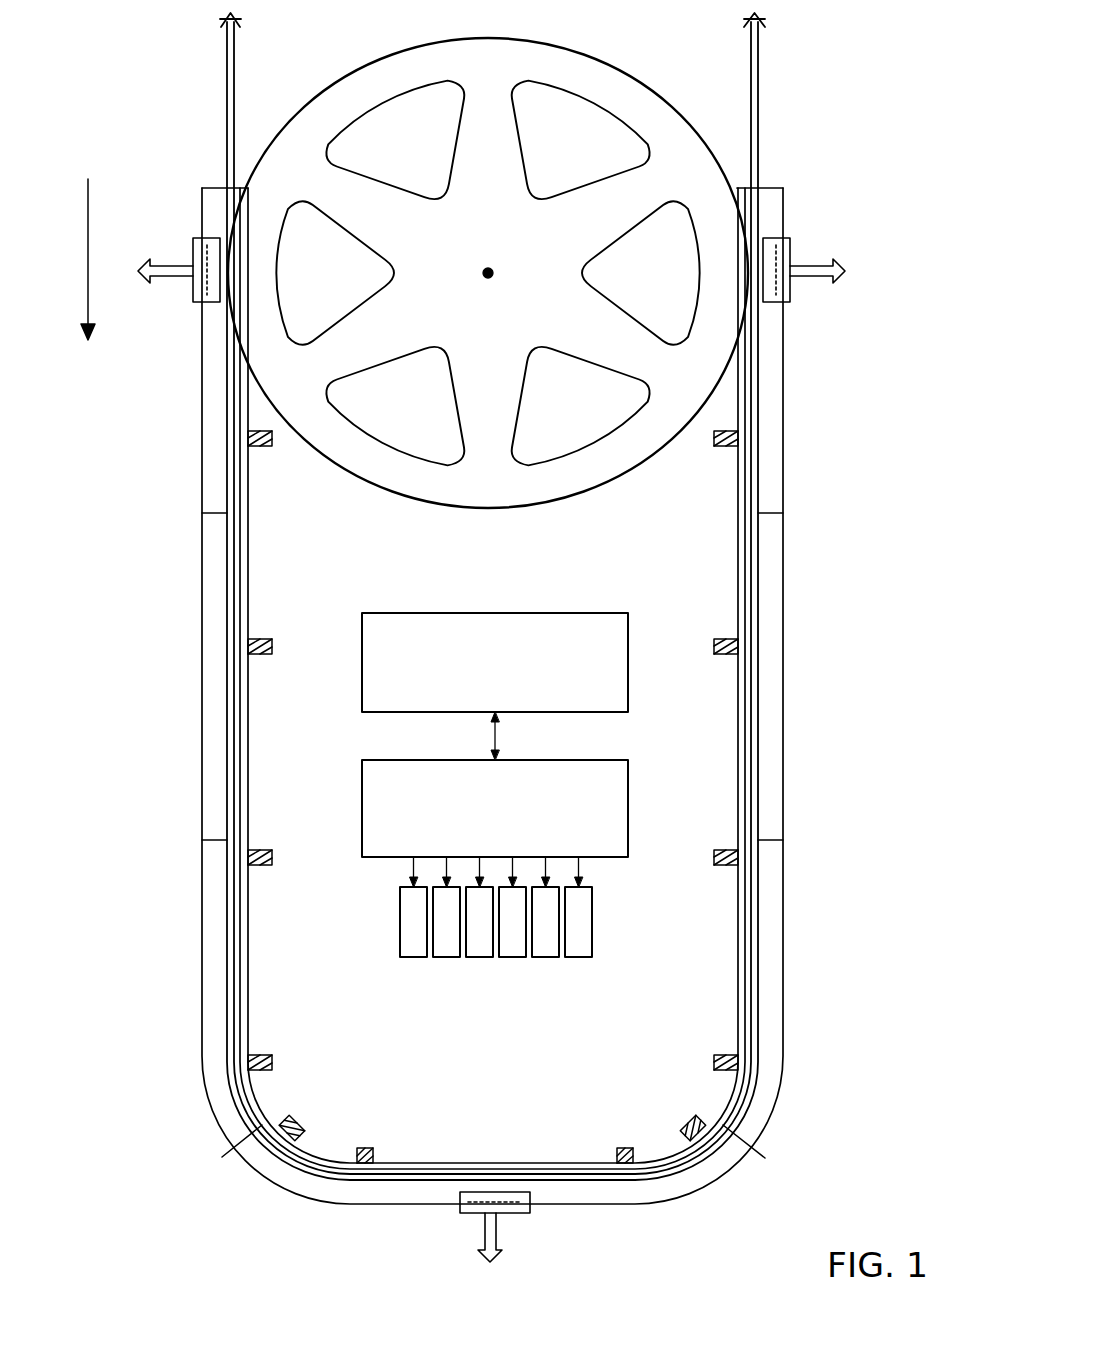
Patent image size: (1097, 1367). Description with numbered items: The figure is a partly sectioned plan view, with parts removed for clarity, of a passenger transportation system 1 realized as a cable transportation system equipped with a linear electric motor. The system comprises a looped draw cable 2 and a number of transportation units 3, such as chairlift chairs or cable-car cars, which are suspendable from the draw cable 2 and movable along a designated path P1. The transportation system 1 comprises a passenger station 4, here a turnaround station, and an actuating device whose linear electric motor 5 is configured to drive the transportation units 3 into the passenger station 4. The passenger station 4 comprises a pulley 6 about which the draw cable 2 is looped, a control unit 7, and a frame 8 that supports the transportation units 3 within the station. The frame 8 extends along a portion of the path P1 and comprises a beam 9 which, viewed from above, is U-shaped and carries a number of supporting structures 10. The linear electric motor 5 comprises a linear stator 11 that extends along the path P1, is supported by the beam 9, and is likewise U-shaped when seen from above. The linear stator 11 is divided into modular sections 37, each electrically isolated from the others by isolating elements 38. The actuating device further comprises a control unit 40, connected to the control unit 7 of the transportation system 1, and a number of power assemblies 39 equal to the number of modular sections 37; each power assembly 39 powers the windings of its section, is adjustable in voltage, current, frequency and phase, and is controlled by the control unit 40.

The passenger transportation system 1 is at (151, 145).
The draw cable 2 is at (228, 78).
The transportation unit 3 is at (160, 293).
The passenger station 4 is at (148, 993).
The linear electric motor 5 is at (177, 312).
The pulley 6 is at (612, 452).
The control unit 7 is at (540, 613).
The frame 8 is at (293, 890).
The beam 9 is at (250, 960).
The supporting structure 10 is at (268, 447).
The linear stator 11 is at (308, 1185).
The modular section 37 is at (190, 440).
The isolating element 38 is at (200, 513).
The power assembly 39 is at (413, 957).
The control unit 40 is at (614, 780).
The path P1 is at (88, 232).